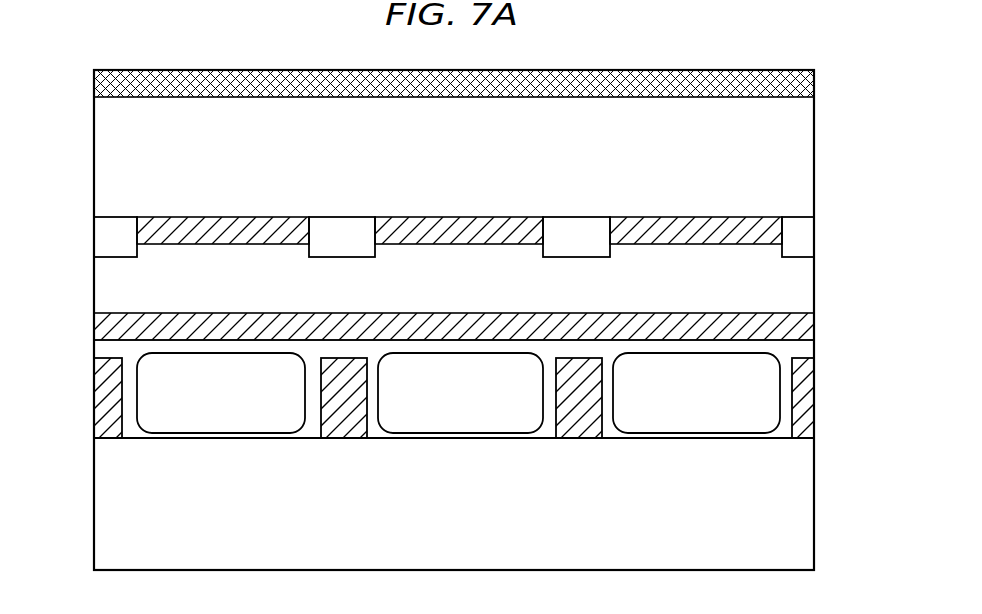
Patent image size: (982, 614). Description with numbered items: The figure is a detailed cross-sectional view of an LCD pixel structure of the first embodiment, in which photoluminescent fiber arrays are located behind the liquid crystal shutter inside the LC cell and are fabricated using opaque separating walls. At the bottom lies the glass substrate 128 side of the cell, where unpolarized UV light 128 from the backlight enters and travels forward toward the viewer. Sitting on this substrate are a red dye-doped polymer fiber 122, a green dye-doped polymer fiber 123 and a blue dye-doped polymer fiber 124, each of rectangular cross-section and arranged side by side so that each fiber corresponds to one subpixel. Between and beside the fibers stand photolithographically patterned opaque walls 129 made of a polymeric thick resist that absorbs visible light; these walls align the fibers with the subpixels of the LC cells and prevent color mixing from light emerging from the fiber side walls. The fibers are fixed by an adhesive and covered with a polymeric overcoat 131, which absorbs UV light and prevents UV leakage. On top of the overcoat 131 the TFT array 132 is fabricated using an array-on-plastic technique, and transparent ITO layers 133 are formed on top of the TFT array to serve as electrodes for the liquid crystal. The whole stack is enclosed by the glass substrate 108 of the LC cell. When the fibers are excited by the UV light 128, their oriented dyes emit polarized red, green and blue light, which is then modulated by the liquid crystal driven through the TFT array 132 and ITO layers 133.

The glass substrate 108 is at (814, 133).
The red dye-doped polymer fiber 122 is at (220, 436).
The green dye-doped polymer fiber 123 is at (455, 436).
The blue dye-doped polymer fiber 124 is at (687, 437).
The unpolarized UV light 128 is at (814, 517).
The opaque walls 129 is at (94, 404).
The overcoat 131 is at (767, 347).
The TFT array 132 is at (117, 216).
The ITO layers 133 is at (683, 216).